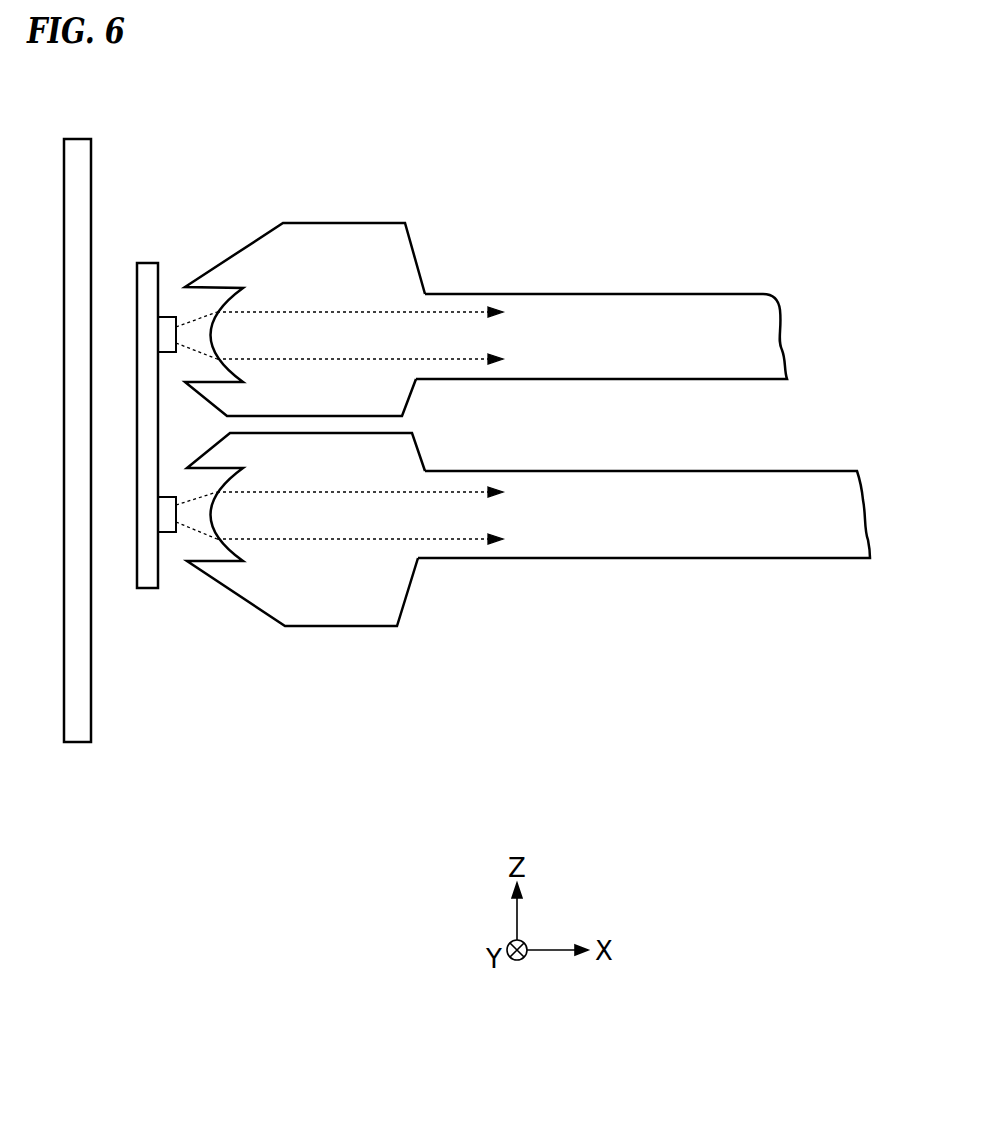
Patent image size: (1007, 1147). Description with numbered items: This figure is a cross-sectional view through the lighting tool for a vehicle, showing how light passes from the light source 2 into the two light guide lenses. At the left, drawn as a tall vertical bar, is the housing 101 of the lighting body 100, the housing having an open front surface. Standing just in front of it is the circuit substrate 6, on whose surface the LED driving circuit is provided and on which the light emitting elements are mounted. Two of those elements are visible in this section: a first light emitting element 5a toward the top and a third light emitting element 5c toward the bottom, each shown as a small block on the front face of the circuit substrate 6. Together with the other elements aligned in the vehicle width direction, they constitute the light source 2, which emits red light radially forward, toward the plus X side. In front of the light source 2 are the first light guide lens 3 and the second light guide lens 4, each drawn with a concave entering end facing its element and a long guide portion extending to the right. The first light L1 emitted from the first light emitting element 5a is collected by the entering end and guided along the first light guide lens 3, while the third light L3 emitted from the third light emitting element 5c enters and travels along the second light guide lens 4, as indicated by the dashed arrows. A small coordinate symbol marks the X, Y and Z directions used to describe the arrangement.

The light source 2 is at (203, 431).
The first light guide lens 3 is at (632, 294).
The second light guide lens 4 is at (645, 558).
The first light emitting element 5a is at (168, 316).
The third light emitting element 5c is at (168, 533).
The circuit substrate 6 is at (145, 262).
The lighting body 100 is at (97, 507).
The housing 101 is at (78, 742).
The first light L1 is at (455, 312).
The third light L3 is at (443, 539).